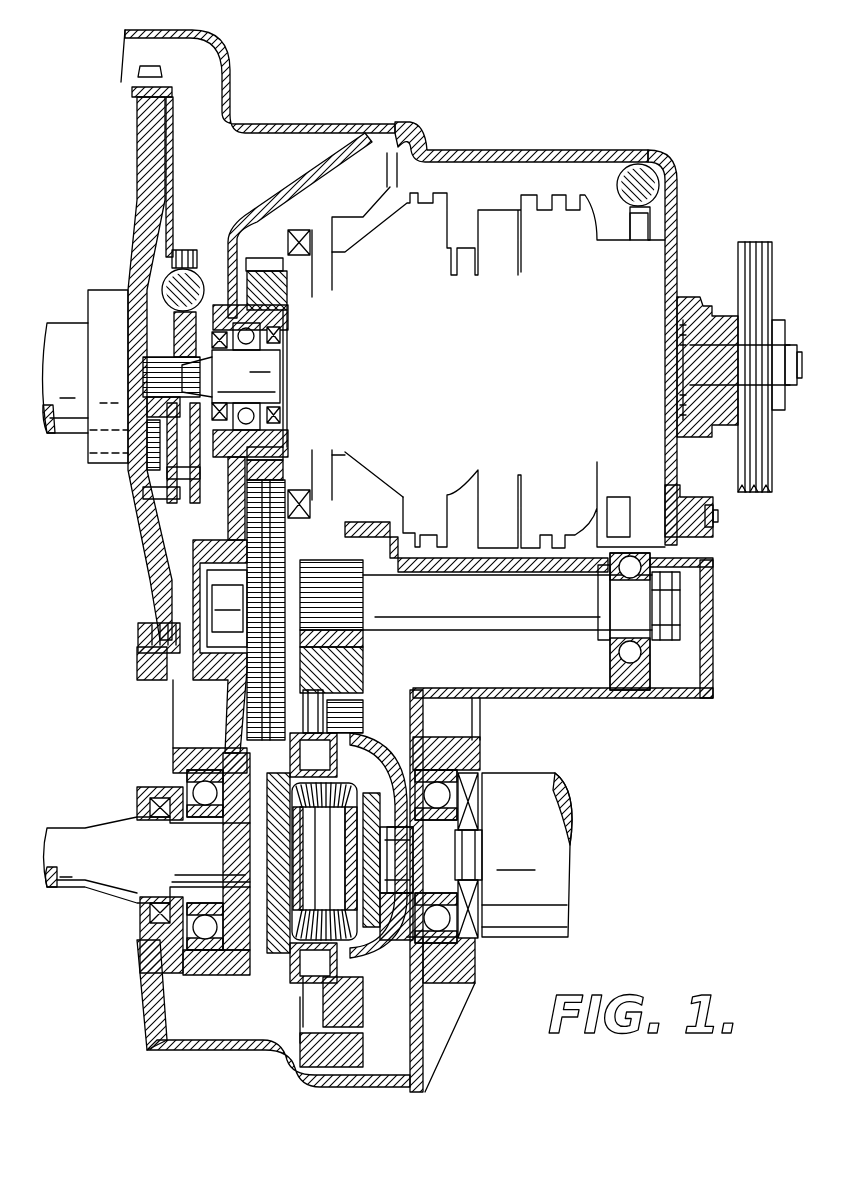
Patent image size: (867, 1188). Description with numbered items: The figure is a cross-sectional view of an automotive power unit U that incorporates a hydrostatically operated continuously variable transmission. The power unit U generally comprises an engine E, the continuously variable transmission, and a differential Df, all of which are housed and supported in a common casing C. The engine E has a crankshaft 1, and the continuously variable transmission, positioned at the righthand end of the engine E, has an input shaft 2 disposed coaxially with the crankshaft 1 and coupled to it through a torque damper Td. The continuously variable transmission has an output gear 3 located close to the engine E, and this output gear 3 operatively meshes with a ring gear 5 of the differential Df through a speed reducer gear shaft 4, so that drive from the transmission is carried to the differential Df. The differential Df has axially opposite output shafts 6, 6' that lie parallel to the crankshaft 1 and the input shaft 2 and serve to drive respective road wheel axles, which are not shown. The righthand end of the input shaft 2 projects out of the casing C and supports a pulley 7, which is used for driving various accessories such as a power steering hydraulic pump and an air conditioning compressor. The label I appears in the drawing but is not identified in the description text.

The crankshaft 1 is at (47, 343).
The input shaft 2 is at (270, 373).
The output gear 3 is at (270, 262).
The speed reducer gear shaft 4 is at (500, 618).
The ring gear 5 is at (352, 672).
The output shaft 6 is at (147, 840).
The output shaft 6' is at (545, 855).
The pulley 7 is at (760, 283).
The engine E is at (86, 231).
The torque damper Td is at (183, 275).
The electric motor I is at (493, 396).
The automotive power unit U is at (602, 128).
The casing C is at (672, 165).
The differential Df is at (267, 1008).